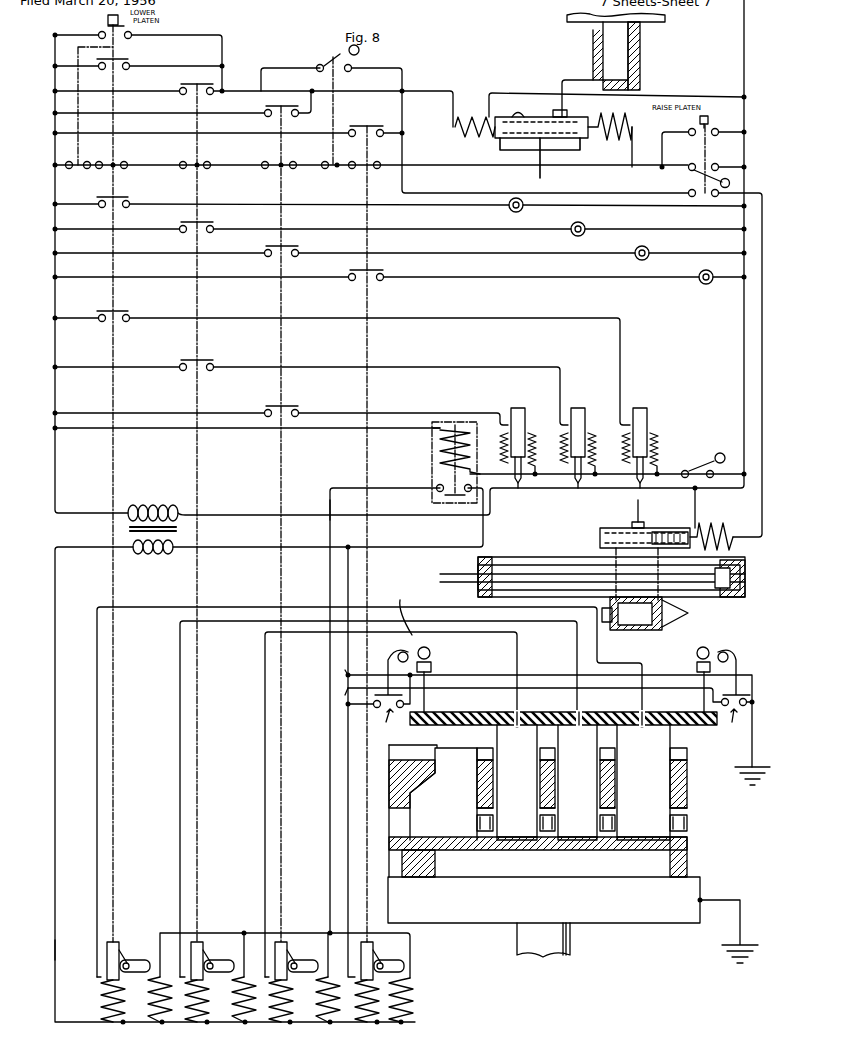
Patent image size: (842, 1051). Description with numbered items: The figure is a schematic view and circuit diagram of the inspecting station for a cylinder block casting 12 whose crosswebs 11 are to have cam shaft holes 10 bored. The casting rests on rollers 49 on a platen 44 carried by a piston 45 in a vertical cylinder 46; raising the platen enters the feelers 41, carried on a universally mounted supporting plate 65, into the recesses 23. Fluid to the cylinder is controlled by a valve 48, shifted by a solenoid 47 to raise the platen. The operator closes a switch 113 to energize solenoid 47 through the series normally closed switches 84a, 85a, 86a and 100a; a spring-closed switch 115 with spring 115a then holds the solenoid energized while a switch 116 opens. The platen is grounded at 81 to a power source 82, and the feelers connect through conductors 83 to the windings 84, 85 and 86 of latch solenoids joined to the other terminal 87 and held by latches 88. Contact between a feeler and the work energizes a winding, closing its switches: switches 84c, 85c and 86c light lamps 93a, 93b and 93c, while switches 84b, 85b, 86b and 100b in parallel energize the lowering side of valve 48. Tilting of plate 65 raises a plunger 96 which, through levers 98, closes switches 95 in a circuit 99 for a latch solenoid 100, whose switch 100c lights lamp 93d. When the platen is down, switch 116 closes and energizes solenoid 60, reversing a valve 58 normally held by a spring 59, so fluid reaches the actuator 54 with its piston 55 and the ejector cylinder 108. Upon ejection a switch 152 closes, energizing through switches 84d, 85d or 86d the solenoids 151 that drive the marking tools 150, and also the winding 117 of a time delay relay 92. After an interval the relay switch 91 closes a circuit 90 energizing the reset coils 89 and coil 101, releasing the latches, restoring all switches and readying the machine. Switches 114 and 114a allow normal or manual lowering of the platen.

The cam shaft holes 10 is at (488, 832).
The crosswebs 11 is at (484, 786).
The cylinder block casting 12 is at (689, 852).
The recesses 23 is at (497, 758).
The feelers 41 is at (515, 845).
The platen 44 is at (574, 21).
The piston 45 is at (602, 44).
The vertical cylinder 46 is at (606, 62).
The solenoid 47 is at (612, 148).
The valve 48 is at (522, 150).
The rollers 49 is at (462, 140).
The hydraulic actuator 54 is at (688, 616).
The piston 55 is at (644, 625).
The valve 58 is at (620, 527).
The spring 59 is at (670, 530).
The solenoid 60 is at (722, 528).
The supporting plate 65 is at (455, 732).
The platen ground connection 81 is at (729, 923).
The power source 82 is at (125, 529).
The conductors 83 is at (420, 620).
The latch type solenoid winding 84 is at (108, 1022).
The normally closed switch 84a is at (116, 162).
The normally open switch 84b is at (130, 64).
The normally open switch 84c is at (130, 202).
The normally open switch 84d is at (131, 315).
The latch type solenoid winding 85 is at (194, 1022).
The normally closed switch 85a is at (200, 162).
The normally open switch 85b is at (181, 88).
The normally open switch 85c is at (213, 227).
The normally open switch 85d is at (214, 364).
The latch type solenoid winding 86 is at (279, 1022).
The normally closed switch 86a is at (284, 163).
The normally open switch 86b is at (266, 110).
The normally open switch 86c is at (298, 251).
The normally open switch 86d is at (298, 410).
The power terminal 87 is at (50, 953).
The latches 88 is at (123, 958).
The reset coils 89 is at (153, 1022).
The reset circuit 90 is at (328, 500).
The relay switch 91 is at (437, 493).
The time delay relay 92 is at (432, 470).
The signal lamp 93a is at (510, 210).
The signal lamp 93b is at (572, 233).
The signal lamp 93c is at (636, 257).
The signal lamp 93d is at (703, 284).
The switches 95 is at (557, 719).
The plunger 96 is at (430, 700).
The levers 98 is at (726, 650).
The circuit 99 is at (345, 690).
The latch type solenoid 100 is at (365, 1022).
The normally closed switch 100a is at (362, 171).
The normally open switch 100b is at (351, 128).
The normally open switch 100c is at (384, 274).
The reset coil 101 is at (416, 1001).
The ejector cylinder 108 is at (549, 562).
The switch 113 is at (700, 135).
The switch 114 is at (338, 52).
The manually operable switch 114a is at (101, 31).
The switch 115 is at (716, 170).
The spring 115a is at (691, 163).
The switch 116 is at (706, 197).
The relay winding 117 is at (438, 446).
The marking tools 150 is at (571, 488).
The solenoids 151 is at (530, 442).
The switch 152 is at (690, 468).